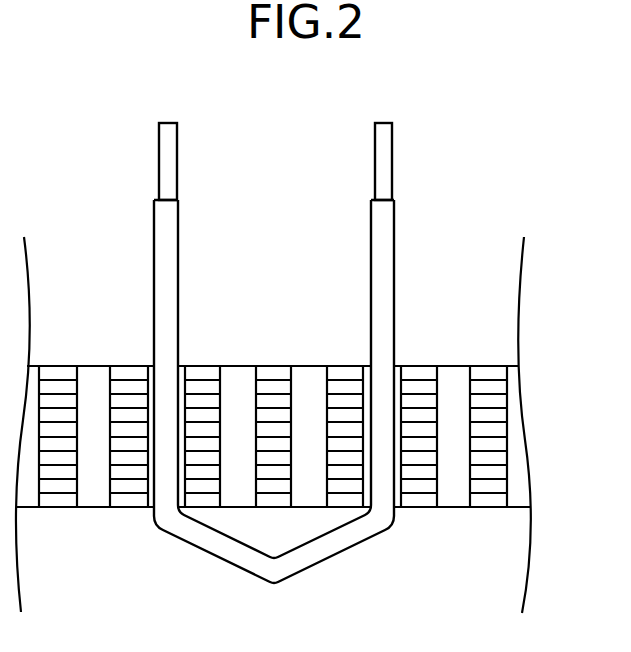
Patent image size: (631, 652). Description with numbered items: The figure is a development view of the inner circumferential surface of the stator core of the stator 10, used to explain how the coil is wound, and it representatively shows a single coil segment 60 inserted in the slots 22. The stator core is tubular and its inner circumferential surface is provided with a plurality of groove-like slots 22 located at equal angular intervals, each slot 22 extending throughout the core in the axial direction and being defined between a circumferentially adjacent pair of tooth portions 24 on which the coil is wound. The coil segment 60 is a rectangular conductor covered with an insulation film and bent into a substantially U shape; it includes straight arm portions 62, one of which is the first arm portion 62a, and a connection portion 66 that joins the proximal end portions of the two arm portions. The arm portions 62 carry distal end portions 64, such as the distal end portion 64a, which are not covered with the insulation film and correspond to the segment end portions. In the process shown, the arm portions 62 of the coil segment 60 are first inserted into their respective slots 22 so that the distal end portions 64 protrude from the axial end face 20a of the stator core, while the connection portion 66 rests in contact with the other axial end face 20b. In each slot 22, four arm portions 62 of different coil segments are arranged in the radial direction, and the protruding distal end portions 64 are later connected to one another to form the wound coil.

The stator 10 is at (485, 196).
The axial end face 20a is at (498, 368).
The another axial end face 20b is at (501, 507).
The slot 22 is at (470, 440).
The tooth portion 24 is at (492, 458).
The coil segment 60 is at (274, 363).
The arm portion 62 is at (274, 356).
The first arm portion 62a is at (357, 230).
The distal end portion 64 is at (275, 150).
The distal end portion of first arm portion 64a is at (357, 132).
The connection portion 66 is at (212, 554).